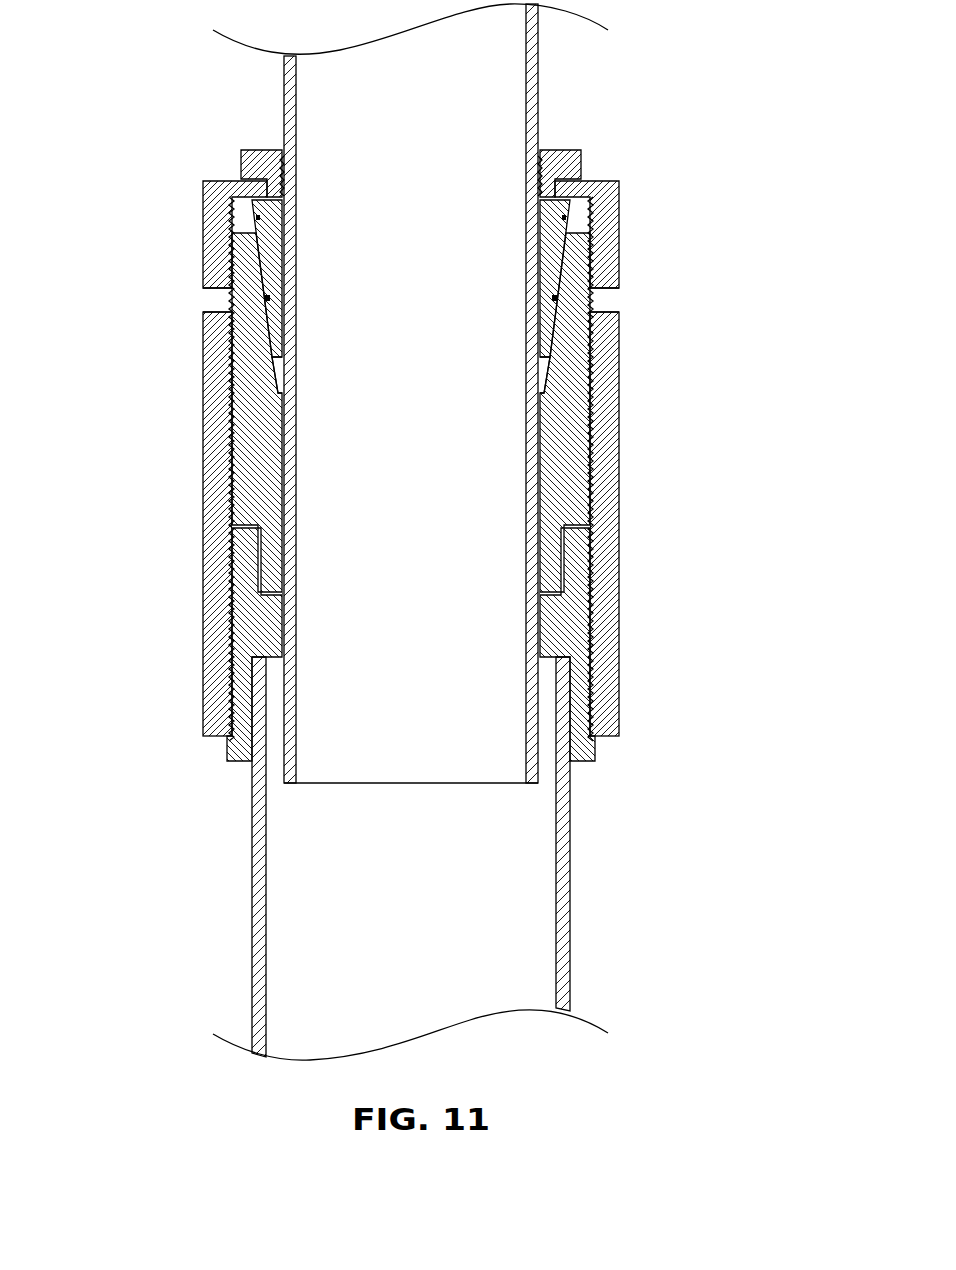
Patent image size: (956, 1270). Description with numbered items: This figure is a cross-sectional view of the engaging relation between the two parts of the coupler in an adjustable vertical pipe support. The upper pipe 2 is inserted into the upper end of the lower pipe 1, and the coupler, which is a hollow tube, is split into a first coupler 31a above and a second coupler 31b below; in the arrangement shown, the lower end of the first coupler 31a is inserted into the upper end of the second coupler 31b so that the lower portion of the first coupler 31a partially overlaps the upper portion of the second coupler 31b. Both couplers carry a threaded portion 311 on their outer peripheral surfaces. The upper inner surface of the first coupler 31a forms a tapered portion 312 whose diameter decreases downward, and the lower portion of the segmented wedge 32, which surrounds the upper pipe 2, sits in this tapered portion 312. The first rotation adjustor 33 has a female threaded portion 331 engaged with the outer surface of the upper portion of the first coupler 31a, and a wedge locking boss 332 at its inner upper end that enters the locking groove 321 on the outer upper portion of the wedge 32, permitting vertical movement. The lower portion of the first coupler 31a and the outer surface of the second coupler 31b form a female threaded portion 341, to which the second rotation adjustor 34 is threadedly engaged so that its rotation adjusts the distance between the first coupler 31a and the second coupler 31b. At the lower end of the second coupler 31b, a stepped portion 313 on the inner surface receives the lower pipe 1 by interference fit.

The lower pipe 1 is at (572, 826).
The upper pipe 2 is at (538, 70).
The wedge 32 is at (582, 158).
The first rotation adjustor 33 is at (620, 225).
The second rotation adjustor 34 is at (621, 523).
The threaded portion 311 is at (232, 302).
The tapered portion 312 is at (282, 373).
The stepped portion 313 is at (255, 645).
The locking groove 321 is at (282, 156).
The female threaded portion 331 is at (230, 208).
The wedge locking boss 332 is at (241, 174).
The female threaded portion 341 is at (230, 427).
The first coupler 31a is at (597, 298).
The second coupler 31b is at (595, 757).